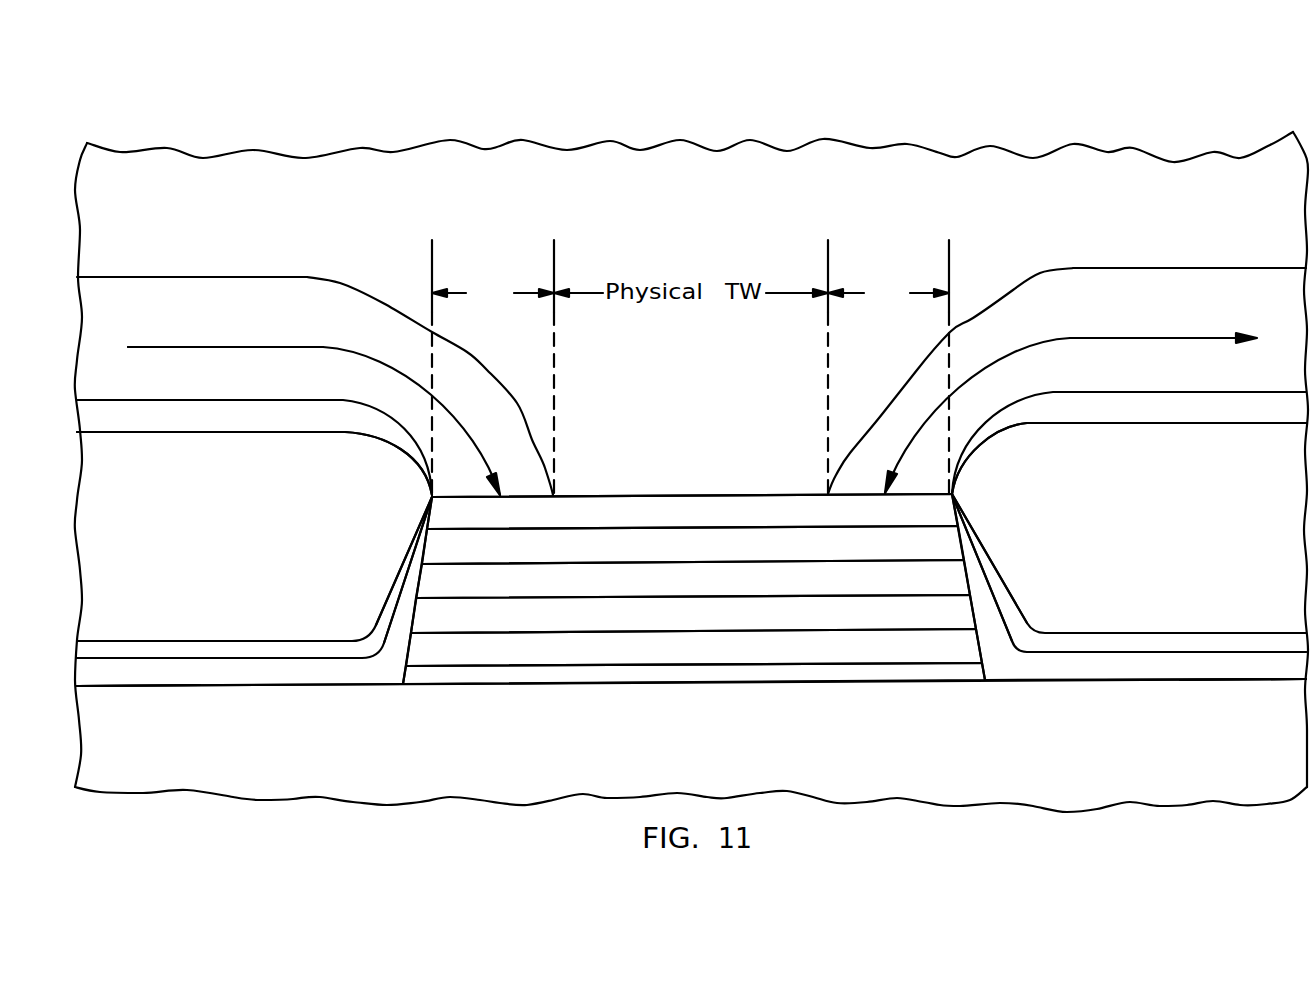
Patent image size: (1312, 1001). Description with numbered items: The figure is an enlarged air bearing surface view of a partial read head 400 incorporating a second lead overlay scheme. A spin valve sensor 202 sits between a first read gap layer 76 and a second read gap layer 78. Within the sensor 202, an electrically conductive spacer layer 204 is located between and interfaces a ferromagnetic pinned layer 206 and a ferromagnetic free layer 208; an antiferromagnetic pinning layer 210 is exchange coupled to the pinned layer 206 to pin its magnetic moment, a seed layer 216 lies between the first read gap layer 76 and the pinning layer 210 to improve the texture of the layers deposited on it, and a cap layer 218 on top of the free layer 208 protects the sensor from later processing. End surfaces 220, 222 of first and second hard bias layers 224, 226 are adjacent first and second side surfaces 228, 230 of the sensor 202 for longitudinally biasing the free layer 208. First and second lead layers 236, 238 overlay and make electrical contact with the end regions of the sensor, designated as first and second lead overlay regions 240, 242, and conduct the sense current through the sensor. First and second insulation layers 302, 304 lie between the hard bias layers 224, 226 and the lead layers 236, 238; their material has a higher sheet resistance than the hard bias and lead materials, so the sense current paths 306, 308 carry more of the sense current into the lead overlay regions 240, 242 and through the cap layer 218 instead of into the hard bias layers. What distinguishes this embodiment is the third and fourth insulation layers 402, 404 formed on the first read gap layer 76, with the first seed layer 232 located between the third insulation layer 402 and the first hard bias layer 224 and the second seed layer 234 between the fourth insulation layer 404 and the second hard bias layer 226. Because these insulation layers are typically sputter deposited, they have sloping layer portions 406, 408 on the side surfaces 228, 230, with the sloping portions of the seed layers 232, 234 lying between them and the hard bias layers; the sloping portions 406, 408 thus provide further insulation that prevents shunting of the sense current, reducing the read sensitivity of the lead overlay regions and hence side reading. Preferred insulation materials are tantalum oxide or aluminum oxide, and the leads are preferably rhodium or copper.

The partial read head 400 is at (886, 122).
The second read gap layer 78 is at (735, 241).
The first read gap layer 76 is at (770, 753).
The first lead layer 236 is at (318, 322).
The second lead layer 238 is at (1223, 315).
The sense current path 306 is at (168, 347).
The sense current path 308 is at (1079, 338).
The first insulation layer 302 is at (313, 423).
The second insulation layer 304 is at (1250, 420).
The first hard bias layer 224 is at (227, 565).
The second hard bias layer 226 is at (1185, 565).
The first side surface 228 is at (423, 549).
The second side surface 230 is at (966, 546).
The sloping layer portion 406 is at (412, 571).
The sloping layer portion 408 is at (972, 566).
The end surface 220 is at (380, 601).
The end surface 222 is at (1006, 596).
The third insulation layer 402 is at (313, 684).
The fourth insulation layer 404 is at (1227, 679).
The first seed layer 232 is at (118, 652).
The second seed layer 234 is at (1247, 643).
The spin valve sensor 202 is at (716, 482).
The cap layer 218 is at (858, 522).
The free layer 208 is at (858, 557).
The spacer layer 204 is at (858, 593).
The pinned layer 206 is at (858, 626).
The antiferromagnetic pinning layer 210 is at (858, 660).
The seed layer 216 is at (838, 675).
The first lead overlay region 240 is at (493, 347).
The second lead overlay region 242 is at (888, 347).